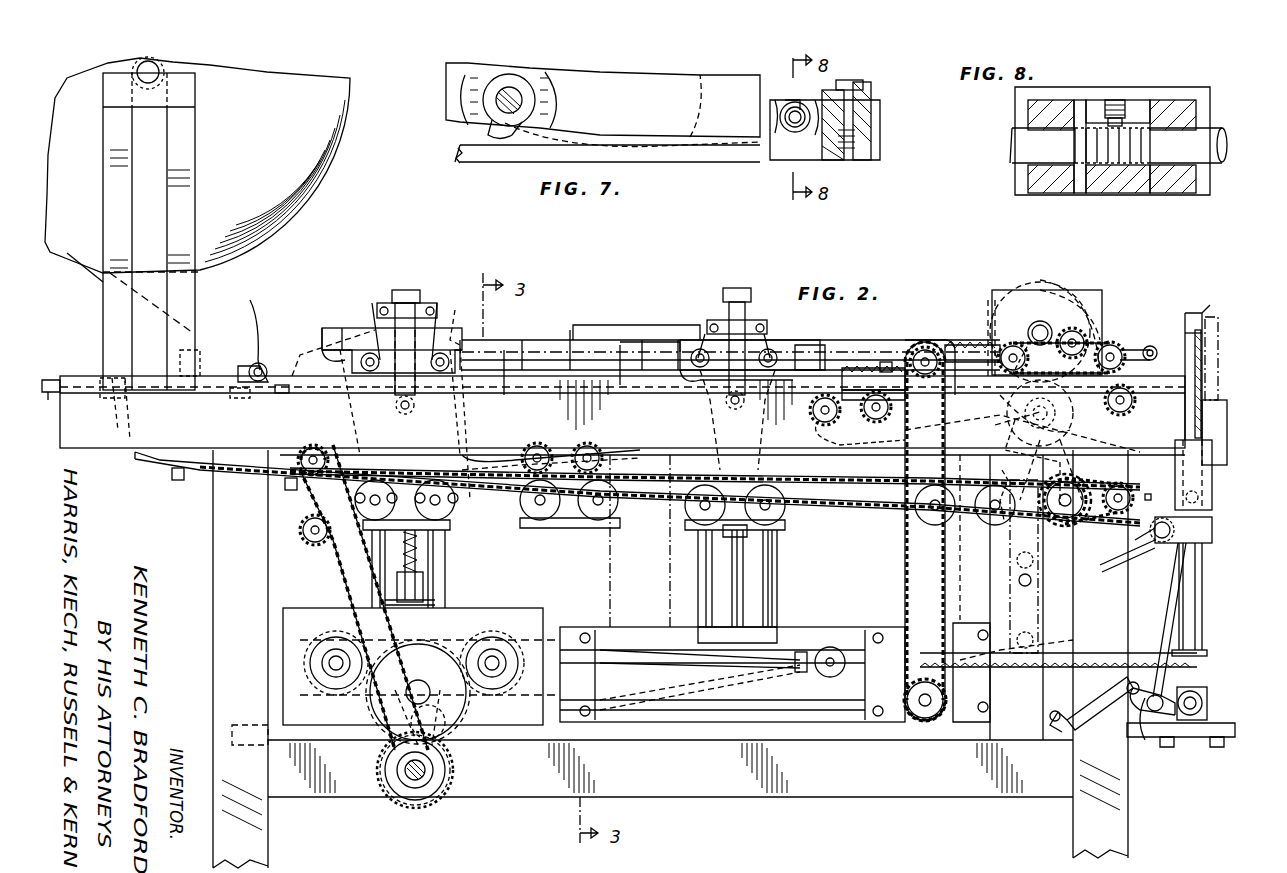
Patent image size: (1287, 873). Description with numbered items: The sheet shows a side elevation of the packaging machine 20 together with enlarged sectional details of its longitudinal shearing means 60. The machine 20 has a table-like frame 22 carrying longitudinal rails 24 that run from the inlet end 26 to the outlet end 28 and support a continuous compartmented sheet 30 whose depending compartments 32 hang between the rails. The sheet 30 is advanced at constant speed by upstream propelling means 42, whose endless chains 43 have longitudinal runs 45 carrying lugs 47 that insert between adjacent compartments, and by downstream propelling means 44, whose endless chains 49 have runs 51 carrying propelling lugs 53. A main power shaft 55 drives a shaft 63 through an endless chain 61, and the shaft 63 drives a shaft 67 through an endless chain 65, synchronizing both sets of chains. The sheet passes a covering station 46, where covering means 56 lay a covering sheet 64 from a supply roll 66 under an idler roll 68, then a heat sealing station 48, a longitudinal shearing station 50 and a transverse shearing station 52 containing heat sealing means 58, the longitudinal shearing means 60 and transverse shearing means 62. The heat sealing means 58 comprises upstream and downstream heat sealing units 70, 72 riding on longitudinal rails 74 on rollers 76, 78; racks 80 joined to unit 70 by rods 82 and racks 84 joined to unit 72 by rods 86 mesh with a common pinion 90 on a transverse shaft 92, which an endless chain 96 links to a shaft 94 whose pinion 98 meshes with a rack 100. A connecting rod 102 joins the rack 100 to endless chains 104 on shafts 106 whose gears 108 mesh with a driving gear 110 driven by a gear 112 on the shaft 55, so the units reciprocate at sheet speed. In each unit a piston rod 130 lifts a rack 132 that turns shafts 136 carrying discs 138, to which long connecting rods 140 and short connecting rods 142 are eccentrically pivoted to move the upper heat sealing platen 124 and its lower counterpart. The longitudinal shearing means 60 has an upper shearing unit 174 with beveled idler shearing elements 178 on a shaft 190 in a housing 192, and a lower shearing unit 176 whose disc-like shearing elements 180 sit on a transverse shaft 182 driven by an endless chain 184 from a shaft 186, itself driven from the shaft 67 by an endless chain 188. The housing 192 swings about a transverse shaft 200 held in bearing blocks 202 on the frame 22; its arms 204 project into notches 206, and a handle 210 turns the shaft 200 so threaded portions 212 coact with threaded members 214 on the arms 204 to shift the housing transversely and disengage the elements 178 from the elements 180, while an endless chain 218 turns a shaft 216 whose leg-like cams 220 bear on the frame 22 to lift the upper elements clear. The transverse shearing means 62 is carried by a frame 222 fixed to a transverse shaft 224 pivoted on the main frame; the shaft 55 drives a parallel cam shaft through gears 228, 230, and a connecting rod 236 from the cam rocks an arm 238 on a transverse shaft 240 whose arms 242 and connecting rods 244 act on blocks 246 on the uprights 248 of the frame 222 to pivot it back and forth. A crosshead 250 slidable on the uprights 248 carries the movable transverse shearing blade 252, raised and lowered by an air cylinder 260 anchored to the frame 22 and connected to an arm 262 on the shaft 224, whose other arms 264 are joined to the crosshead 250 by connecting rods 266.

In FIG. 2, the packaging machine 20 is at (743, 820).
In FIG. 7, the frame 22 is at (705, 165).
In FIG. 8, the frame 22 is at (1018, 211).
In FIG. 2, the frame 22 is at (828, 806).
In FIG. 2, the longitudinal rails 24 is at (325, 382).
In FIG. 2, the inlet end 26 is at (66, 327).
In FIG. 2, the outlet end 28 is at (1186, 290).
In FIG. 2, the compartmented sheet 30 is at (54, 370).
In FIG. 2, the depending compartments 32 is at (52, 396).
In FIG. 2, the upstream propelling means 42 is at (281, 378).
In FIG. 2, the endless chains 43 is at (205, 478).
In FIG. 2, the downstream propelling means 44 is at (983, 328).
In FIG. 2, the longitudinal runs 45 is at (165, 370).
In FIG. 2, the covering station 46 is at (272, 294).
In FIG. 2, the lugs 47 is at (120, 378).
In FIG. 2, the heat sealing station 48 is at (580, 300).
In FIG. 2, the endless chains 49 is at (897, 448).
In FIG. 2, the longitudinal shearing station 50 is at (1022, 277).
In FIG. 2, the longitudinal runs 51 is at (1110, 412).
In FIG. 2, the transverse shearing station 52 is at (1212, 296).
In FIG. 2, the propelling lugs 53 is at (882, 392).
In FIG. 2, the main power shaft 55 is at (412, 780).
In FIG. 2, the covering means 56 is at (255, 362).
In FIG. 2, the heat sealing means 58 is at (454, 330).
In FIG. 2, the longitudinal shearing means 60 is at (1069, 280).
In FIG. 2, the endless chain 61 is at (340, 585).
In FIG. 2, the transverse shearing means 62 is at (1220, 306).
In FIG. 2, the shaft 63 is at (313, 450).
In FIG. 2, the covering sheet 64 is at (210, 340).
In FIG. 2, the endless chain 65 is at (810, 470).
In FIG. 2, the supply roll 66 is at (322, 160).
In FIG. 2, the shaft 67 is at (1138, 496).
In FIG. 2, the idler roll 68 is at (266, 362).
In FIG. 2, the upstream heat sealing unit 70 is at (405, 280).
In FIG. 2, the downstream heat sealing unit 72 is at (742, 277).
In FIG. 2, the longitudinal rails 74 is at (540, 372).
In FIG. 2, the rollers 76 is at (358, 350).
In FIG. 2, the rollers 78 is at (694, 345).
In FIG. 2, the racks 80 is at (852, 368).
In FIG. 2, the rods 82 is at (572, 385).
In FIG. 2, the racks 84 is at (952, 340).
In FIG. 2, the rods 86 is at (873, 345).
In FIG. 2, the pinion 90 is at (884, 357).
In FIG. 2, the transverse shaft 92 is at (926, 338).
In FIG. 2, the shaft 94 is at (915, 722).
In FIG. 2, the endless chain 96 is at (902, 553).
In FIG. 2, the pinion 98 is at (932, 725).
In FIG. 2, the rack 100 is at (1190, 655).
In FIG. 2, the connecting rod 102 is at (558, 640).
In FIG. 2, the endless chains 104 is at (408, 630).
In FIG. 2, the transverse shafts 106 is at (332, 668).
In FIG. 2, the gears 108 is at (332, 638).
In FIG. 2, the driving gear 110 is at (380, 712).
In FIG. 2, the gear 112 is at (450, 760).
In FIG. 2, the upper heat sealing platen 124 is at (336, 337).
In FIG. 2, the piston rod 130 is at (425, 595).
In FIG. 2, the rack 132 is at (420, 553).
In FIG. 2, the shafts 136 is at (415, 495).
In FIG. 2, the discs 138 is at (345, 545).
In FIG. 2, the connecting rods 140 is at (452, 470).
In FIG. 2, the connecting rods 142 is at (446, 478).
In FIG. 7, the upper longitudinal shearing unit 174 is at (443, 133).
In FIG. 2, the upper longitudinal shearing unit 174 is at (1098, 296).
In FIG. 2, the lower longitudinal shearing unit 176 is at (1000, 482).
In FIG. 7, the upper shearing elements 178 is at (548, 138).
In FIG. 2, the upper shearing elements 178 is at (1100, 305).
In FIG. 2, the lower shearing elements 180 is at (1000, 408).
In FIG. 2, the transverse shaft 182 is at (1011, 458).
In FIG. 2, the endless chain 184 is at (1072, 470).
In FIG. 2, the shaft 186 is at (1062, 508).
In FIG. 2, the endless chain 188 is at (1112, 512).
In FIG. 2, the shaft 190 is at (1040, 322).
In FIG. 7, the housing 192 is at (448, 70).
In FIG. 2, the housing 192 is at (1078, 290).
In FIG. 7, the transverse shaft 200 is at (790, 140).
In FIG. 8, the transverse shaft 200 is at (1200, 137).
In FIG. 7, the bearing blocks 202 is at (866, 98).
In FIG. 8, the bearing blocks 202 is at (1040, 113).
In FIG. 2, the bearing blocks 202 is at (1128, 350).
In FIG. 7, the arms 204 is at (830, 150).
In FIG. 8, the arms 204 is at (1135, 100).
In FIG. 7, the notches 206 is at (848, 90).
In FIG. 8, the notches 206 is at (1080, 100).
In FIG. 2, the handle 210 is at (1163, 351).
In FIG. 8, the threaded portions 212 is at (1115, 165).
In FIG. 7, the threaded members 214 is at (778, 108).
In FIG. 8, the threaded members 214 is at (1125, 115).
In FIG. 7, the rotatable shaft 216 is at (496, 96).
In FIG. 2, the rotatable shaft 216 is at (1032, 330).
In FIG. 2, the endless chain 218 is at (1092, 345).
In FIG. 7, the leg-like cams 220 is at (502, 140).
In FIG. 2, the frame 222 is at (1216, 570).
In FIG. 2, the transverse shaft 224 is at (1202, 700).
In FIG. 2, the gear 228 is at (440, 805).
In FIG. 2, the gear 230 is at (450, 735).
In FIG. 2, the connecting rod 236 is at (790, 640).
In FIG. 2, the arm 238 is at (1040, 612).
In FIG. 2, the transverse shaft 240 is at (1018, 580).
In FIG. 2, the arms 242 is at (1010, 553).
In FIG. 2, the connecting rods 244 is at (1158, 545).
In FIG. 2, the blocks 246 is at (1212, 527).
In FIG. 2, the uprights 248 is at (1190, 585).
In FIG. 2, the crosshead 250 is at (1222, 493).
In FIG. 2, the transverse shearing blade 252 is at (1202, 420).
In FIG. 2, the air cylinder 260 is at (1058, 735).
In FIG. 2, the arm 262 is at (1150, 742).
In FIG. 2, the arms 264 is at (1165, 700).
In FIG. 2, the connecting rods 266 is at (1163, 600).